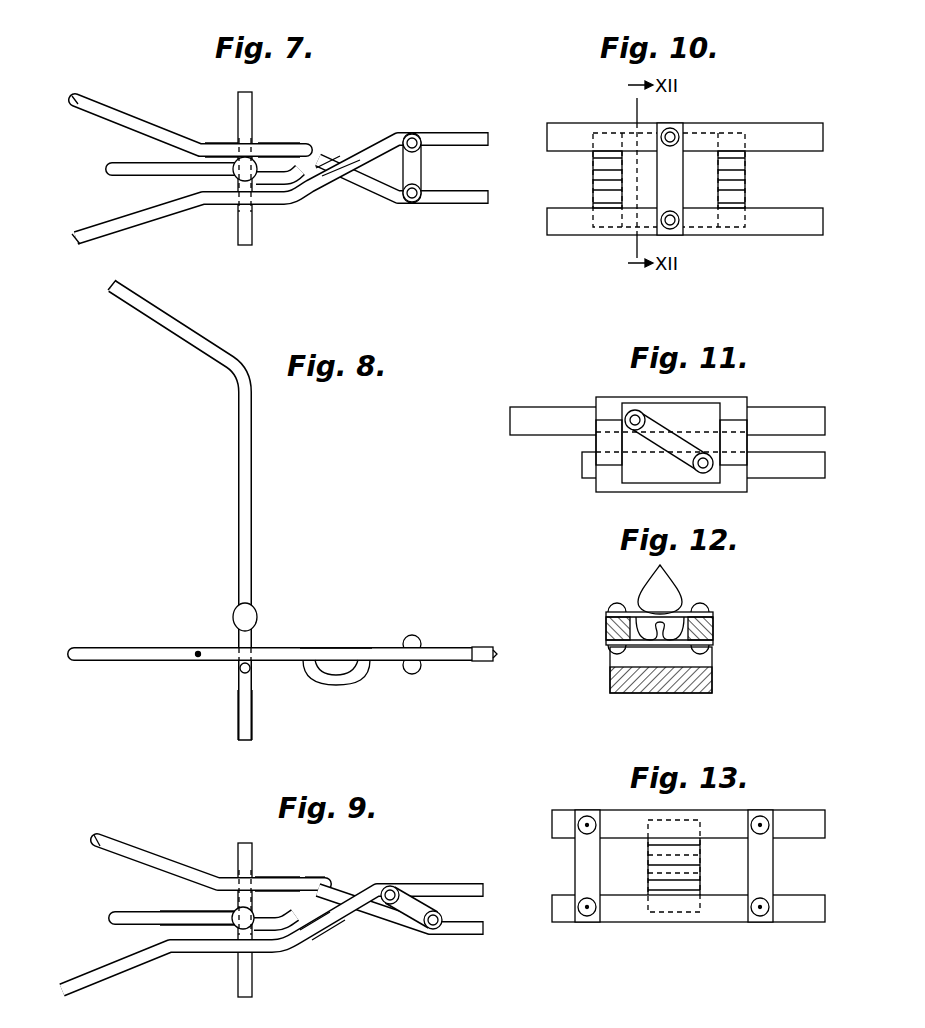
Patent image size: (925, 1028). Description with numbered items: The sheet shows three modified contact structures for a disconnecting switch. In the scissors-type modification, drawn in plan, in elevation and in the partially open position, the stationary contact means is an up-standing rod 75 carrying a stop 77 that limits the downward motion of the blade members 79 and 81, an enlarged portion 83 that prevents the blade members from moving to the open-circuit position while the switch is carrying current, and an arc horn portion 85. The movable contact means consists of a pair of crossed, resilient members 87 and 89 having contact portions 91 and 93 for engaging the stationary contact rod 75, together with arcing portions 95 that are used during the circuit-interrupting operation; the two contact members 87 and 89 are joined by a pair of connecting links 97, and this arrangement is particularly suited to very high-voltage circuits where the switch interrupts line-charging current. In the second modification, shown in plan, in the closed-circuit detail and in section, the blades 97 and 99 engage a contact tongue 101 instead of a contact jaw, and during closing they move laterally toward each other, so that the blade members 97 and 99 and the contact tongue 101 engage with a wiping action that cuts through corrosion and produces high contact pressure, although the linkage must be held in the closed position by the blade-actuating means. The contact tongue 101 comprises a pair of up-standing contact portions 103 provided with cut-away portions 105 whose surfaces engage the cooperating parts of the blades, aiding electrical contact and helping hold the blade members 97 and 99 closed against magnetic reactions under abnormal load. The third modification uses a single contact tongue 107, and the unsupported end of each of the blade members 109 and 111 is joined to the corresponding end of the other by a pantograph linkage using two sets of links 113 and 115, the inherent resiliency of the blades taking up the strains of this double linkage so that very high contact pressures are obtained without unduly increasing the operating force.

In FIG. 8, the up-standing rod 75 is at (253, 708).
In FIG. 9, the up-standing rod 75 is at (195, 911).
In FIG. 7, the stop 77 is at (253, 122).
In FIG. 8, the stop 77 is at (240, 670).
In FIG. 9, the stop 77 is at (253, 866).
In FIG. 7, the blade member 79 is at (456, 132).
In FIG. 8, the blade member 79 is at (494, 647).
In FIG. 9, the blade member 79 is at (461, 883).
In FIG. 7, the blade member 81 is at (462, 203).
In FIG. 8, the blade member 81 is at (464, 647).
In FIG. 9, the blade member 81 is at (465, 938).
In FIG. 7, the enlarged portion 83 is at (256, 160).
In FIG. 8, the enlarged portion 83 is at (258, 613).
In FIG. 9, the enlarged portion 83 is at (255, 918).
In FIG. 7, the arc horn portion 85 is at (130, 180).
In FIG. 8, the arc horn portion 85 is at (253, 387).
In FIG. 9, the arc horn portion 85 is at (125, 929).
In FIG. 7, the crossed resilient member 87 is at (303, 146).
In FIG. 8, the crossed resilient member 87 is at (348, 686).
In FIG. 9, the crossed resilient member 87 is at (326, 877).
In FIG. 7, the crossed resilient member 89 is at (320, 186).
In FIG. 8, the crossed resilient member 89 is at (337, 647).
In FIG. 9, the crossed resilient member 89 is at (322, 927).
In FIG. 7, the contact portion 91 is at (212, 150).
In FIG. 9, the contact portion 91 is at (285, 891).
In FIG. 7, the contact portion 93 is at (262, 182).
In FIG. 9, the contact portion 93 is at (222, 931).
In FIG. 7, the arcing portions 95 is at (148, 128).
In FIG. 8, the arcing portions 95 is at (168, 647).
In FIG. 9, the arcing portions 95 is at (147, 852).
In FIG. 7, the connecting links / blade member 97 is at (421, 166).
In FIG. 8, the connecting links / blade member 97 is at (420, 641).
In FIG. 9, the connecting links / blade member 97 is at (411, 908).
In FIG. 10, the connecting links / blade member 97 is at (786, 123).
In FIG. 11, the connecting links / blade member 97 is at (543, 407).
In FIG. 12, the connecting links / blade member 97 is at (606, 634).
In FIG. 10, the blade member 99 is at (797, 236).
In FIG. 11, the blade member 99 is at (583, 468).
In FIG. 12, the blade member 99 is at (713, 633).
In FIG. 10, the contact tongue 101 is at (688, 191).
In FIG. 11, the contact tongue 101 is at (722, 398).
In FIG. 12, the contact tongue 101 is at (713, 678).
In FIG. 10, the up-standing contact portions 103 is at (598, 178).
In FIG. 11, the up-standing contact portions 103 is at (596, 438).
In FIG. 12, the up-standing contact portions 103 is at (680, 594).
In FIG. 10, the cut-away portions 105 is at (603, 168).
In FIG. 12, the cut-away portions 105 is at (636, 617).
In FIG. 13, the single contact tongue 107 is at (700, 867).
In FIG. 13, the blade member 109 is at (733, 810).
In FIG. 13, the blade member 111 is at (722, 920).
In FIG. 13, the set of links 113 is at (575, 869).
In FIG. 13, the set of links 115 is at (774, 871).